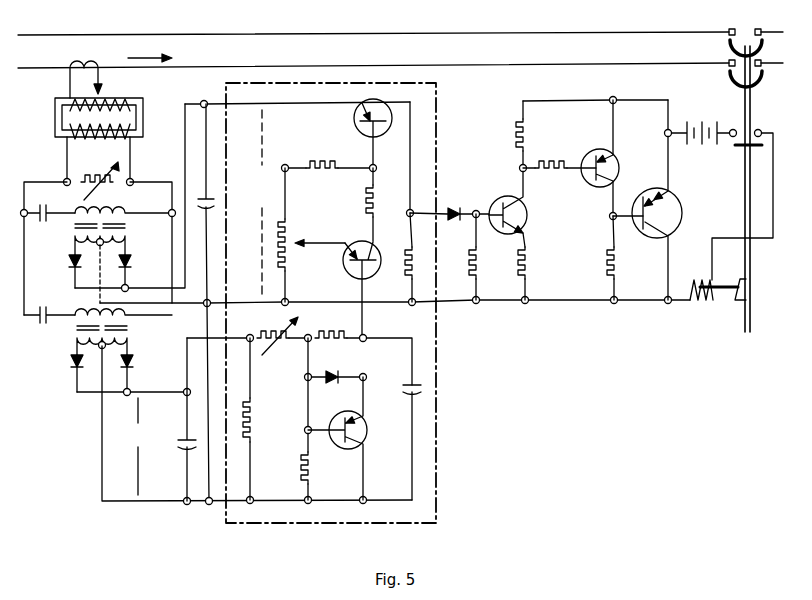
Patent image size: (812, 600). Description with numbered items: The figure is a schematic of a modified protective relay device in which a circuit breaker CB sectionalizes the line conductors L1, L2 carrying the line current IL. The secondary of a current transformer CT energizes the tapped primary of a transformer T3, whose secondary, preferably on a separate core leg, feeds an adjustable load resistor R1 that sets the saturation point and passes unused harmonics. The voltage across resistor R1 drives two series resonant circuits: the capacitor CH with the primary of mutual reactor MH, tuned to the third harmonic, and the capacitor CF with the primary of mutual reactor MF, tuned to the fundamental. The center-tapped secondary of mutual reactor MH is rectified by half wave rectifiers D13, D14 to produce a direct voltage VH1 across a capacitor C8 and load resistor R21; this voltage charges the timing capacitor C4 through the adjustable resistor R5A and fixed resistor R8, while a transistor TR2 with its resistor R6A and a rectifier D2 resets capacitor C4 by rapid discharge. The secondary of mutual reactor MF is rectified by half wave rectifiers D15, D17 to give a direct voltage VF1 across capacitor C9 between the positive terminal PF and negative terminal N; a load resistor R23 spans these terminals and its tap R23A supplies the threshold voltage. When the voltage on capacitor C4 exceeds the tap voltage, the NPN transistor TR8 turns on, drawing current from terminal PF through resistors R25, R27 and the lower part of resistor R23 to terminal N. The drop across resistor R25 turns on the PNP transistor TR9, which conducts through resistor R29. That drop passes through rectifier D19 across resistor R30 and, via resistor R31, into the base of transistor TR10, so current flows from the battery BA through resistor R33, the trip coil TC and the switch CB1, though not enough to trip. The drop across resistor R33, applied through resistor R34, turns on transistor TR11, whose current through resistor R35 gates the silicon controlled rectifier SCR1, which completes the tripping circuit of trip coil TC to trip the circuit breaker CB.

The line conductor L1 is at (23, 35).
The line conductor L2 is at (24, 68).
The load current IL is at (161, 60).
The current transformer CT is at (71, 60).
The transformer T3 is at (141, 101).
The adjustable load resistor R1 is at (98, 176).
The capacitor CF is at (49, 206).
The mutual reactor MF is at (126, 228).
The half wave rectifier D15 is at (70, 262).
The half wave rectifier D17 is at (128, 258).
The capacitor CH is at (42, 306).
The negative terminal N is at (204, 306).
The positive terminal PF is at (204, 100).
The capacitor C9 is at (213, 209).
The mutual reactor MH is at (126, 324).
The half wave rectifier D13 is at (70, 360).
The half wave rectifier D14 is at (135, 362).
The voltage VH1 is at (135, 446).
The capacitor C8 is at (180, 450).
The voltage VF1 is at (257, 202).
The transistor TR9 is at (355, 121).
The resistor R25 is at (333, 145).
The resistor R27 is at (366, 200).
The load resistor R23 is at (296, 220).
The tap R23A is at (322, 235).
The transistor TR8 is at (347, 264).
The resistor R29 is at (406, 268).
The adjustable resistor R5A is at (285, 352).
The fixed resistor R8 is at (347, 330).
The diode D2 is at (338, 371).
The capacitor C4 is at (404, 388).
The load resistor R21 is at (256, 428).
The resistor R6A is at (300, 469).
The transistor TR2 is at (369, 424).
The rectifier D19 is at (454, 207).
The transistor TR10 is at (528, 214).
The resistor R30 is at (483, 268).
The resistor R31 is at (531, 268).
The resistor R33 is at (518, 141).
The resistor R34 is at (552, 161).
The transistor TR11 is at (598, 188).
The resistor R35 is at (619, 262).
The silicon controlled rectifier SCR1 is at (683, 205).
The battery BA is at (708, 124).
The circuit breaker CB is at (742, 100).
The switch CB1 is at (734, 149).
The trip coil TC is at (690, 286).